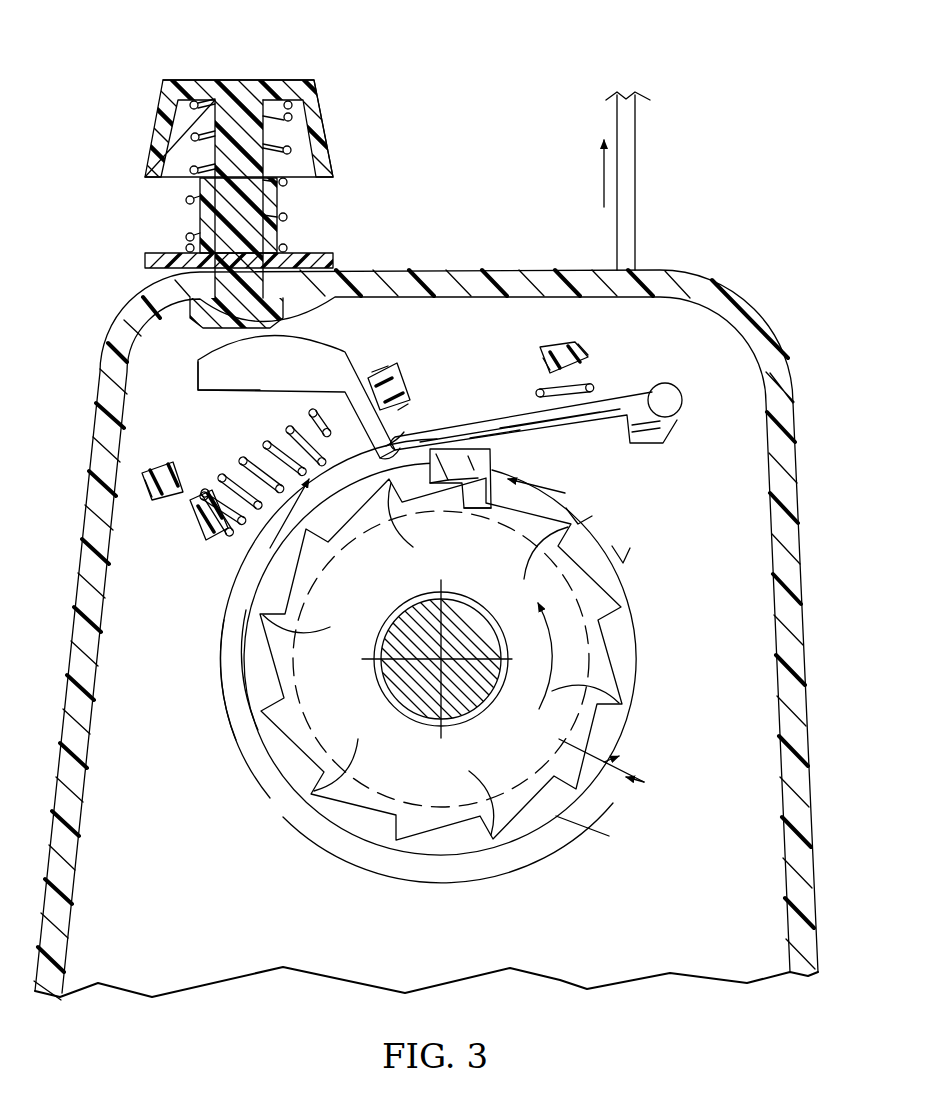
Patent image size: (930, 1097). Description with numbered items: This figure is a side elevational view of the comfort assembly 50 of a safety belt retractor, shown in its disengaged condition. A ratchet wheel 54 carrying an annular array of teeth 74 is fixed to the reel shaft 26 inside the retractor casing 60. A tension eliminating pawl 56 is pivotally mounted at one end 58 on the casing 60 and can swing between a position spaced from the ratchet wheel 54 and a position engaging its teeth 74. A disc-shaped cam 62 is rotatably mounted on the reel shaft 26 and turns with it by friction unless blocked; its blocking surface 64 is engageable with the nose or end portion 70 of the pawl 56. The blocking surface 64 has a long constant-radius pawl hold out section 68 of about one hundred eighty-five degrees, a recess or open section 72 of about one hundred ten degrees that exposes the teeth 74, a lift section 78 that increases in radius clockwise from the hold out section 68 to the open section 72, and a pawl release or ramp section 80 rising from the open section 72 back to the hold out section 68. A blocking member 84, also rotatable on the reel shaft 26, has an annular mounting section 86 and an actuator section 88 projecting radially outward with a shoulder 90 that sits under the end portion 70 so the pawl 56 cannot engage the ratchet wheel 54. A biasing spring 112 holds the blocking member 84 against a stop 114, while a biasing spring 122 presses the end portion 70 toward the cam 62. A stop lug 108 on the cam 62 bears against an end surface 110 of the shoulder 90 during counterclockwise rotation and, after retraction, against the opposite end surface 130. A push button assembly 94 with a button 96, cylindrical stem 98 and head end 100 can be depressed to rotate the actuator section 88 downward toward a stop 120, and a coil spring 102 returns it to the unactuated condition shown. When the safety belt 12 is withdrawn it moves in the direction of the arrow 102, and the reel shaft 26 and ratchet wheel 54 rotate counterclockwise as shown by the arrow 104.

The safety belt 12 is at (628, 152).
The reel shaft 26 is at (453, 682).
The comfort assembly 50 is at (520, 133).
The ratchet wheel 54 is at (623, 606).
The tension eliminating pawl 56 is at (609, 388).
The end 58 is at (672, 400).
The retractor casing 60 is at (760, 318).
The cam 62 is at (259, 737).
The blocking surface 64 is at (246, 669).
The pawl hold out section 68 is at (434, 836).
The end portion 70 is at (392, 445).
The open section 72 is at (590, 530).
The teeth 74 is at (336, 590).
The lift section 78 is at (452, 447).
The ramp section 80 is at (611, 794).
The blocking member 84 is at (333, 341).
The annular mounting section 86 is at (584, 512).
The actuator section 88 is at (223, 370).
The shoulder 90 is at (393, 447).
The push button assembly 94 is at (318, 78).
The button 96 is at (325, 153).
The stem 98 is at (222, 204).
The head end 100 is at (335, 297).
The coil spring 102 is at (191, 135).
The arrow 104 is at (545, 665).
The stop lug 108 is at (462, 510).
The end surface 110 is at (405, 494).
The biasing spring 112 is at (243, 458).
The stop 114 is at (400, 370).
The stop 120 is at (157, 487).
The biasing spring 122 is at (536, 384).
The end surface 130 is at (266, 557).